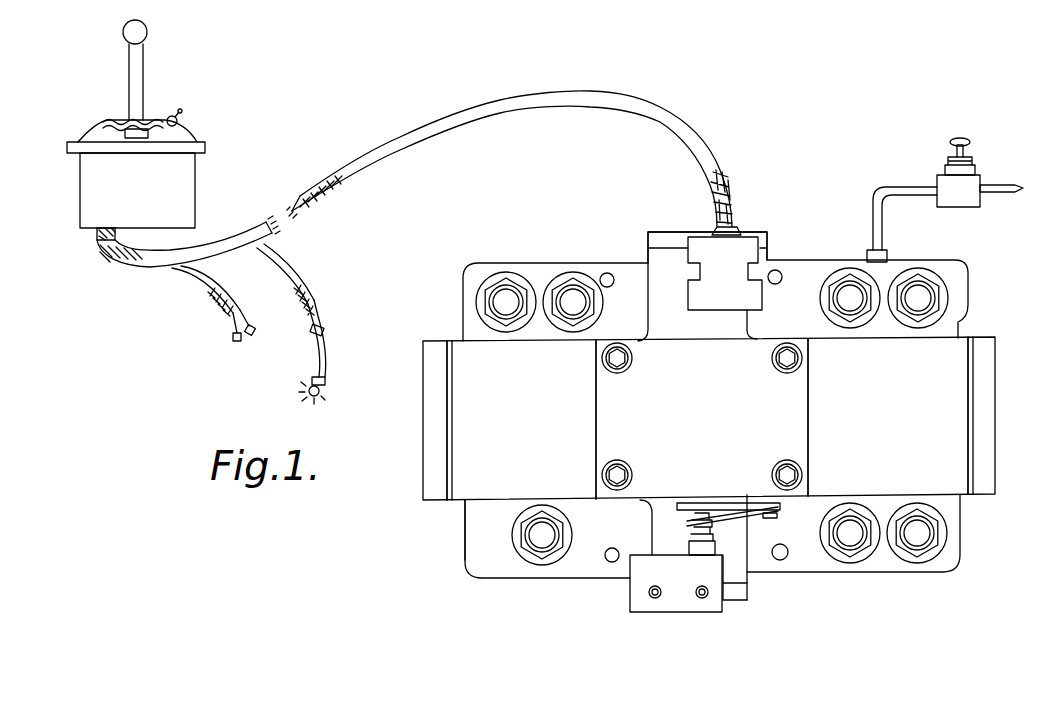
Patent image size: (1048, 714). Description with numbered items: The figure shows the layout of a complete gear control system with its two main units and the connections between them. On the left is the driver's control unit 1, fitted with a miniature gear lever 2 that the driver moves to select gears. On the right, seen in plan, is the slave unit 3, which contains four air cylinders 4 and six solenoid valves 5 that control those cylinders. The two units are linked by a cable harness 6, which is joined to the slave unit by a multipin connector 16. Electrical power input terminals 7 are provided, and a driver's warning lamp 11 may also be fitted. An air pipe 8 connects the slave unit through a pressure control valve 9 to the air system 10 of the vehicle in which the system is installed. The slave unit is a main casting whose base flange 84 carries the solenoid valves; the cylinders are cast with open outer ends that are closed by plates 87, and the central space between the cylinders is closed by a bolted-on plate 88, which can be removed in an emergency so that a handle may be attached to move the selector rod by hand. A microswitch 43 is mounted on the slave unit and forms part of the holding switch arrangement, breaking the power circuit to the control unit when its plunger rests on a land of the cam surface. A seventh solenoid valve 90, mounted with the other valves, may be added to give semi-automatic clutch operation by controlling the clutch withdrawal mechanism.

The driver's control unit 1 is at (202, 140).
The miniature gear lever 2 is at (146, 36).
The slave unit 3 is at (460, 503).
The air cylinder 4 is at (525, 436).
The solenoid valve 5 is at (575, 275).
The cable harness 6 is at (515, 100).
The electrical power input terminals 7 is at (260, 344).
The air pipe 8 is at (912, 185).
The pressure control valve 9 is at (978, 177).
The air system 10 is at (1008, 193).
The driver's warning lamp 11 is at (328, 396).
The multipin connector 16 is at (763, 253).
The switch 43 is at (673, 613).
The base flange 84 is at (473, 547).
The plate 87 is at (670, 236).
The plate 88 is at (712, 434).
The seventh solenoid valve 90 is at (948, 288).